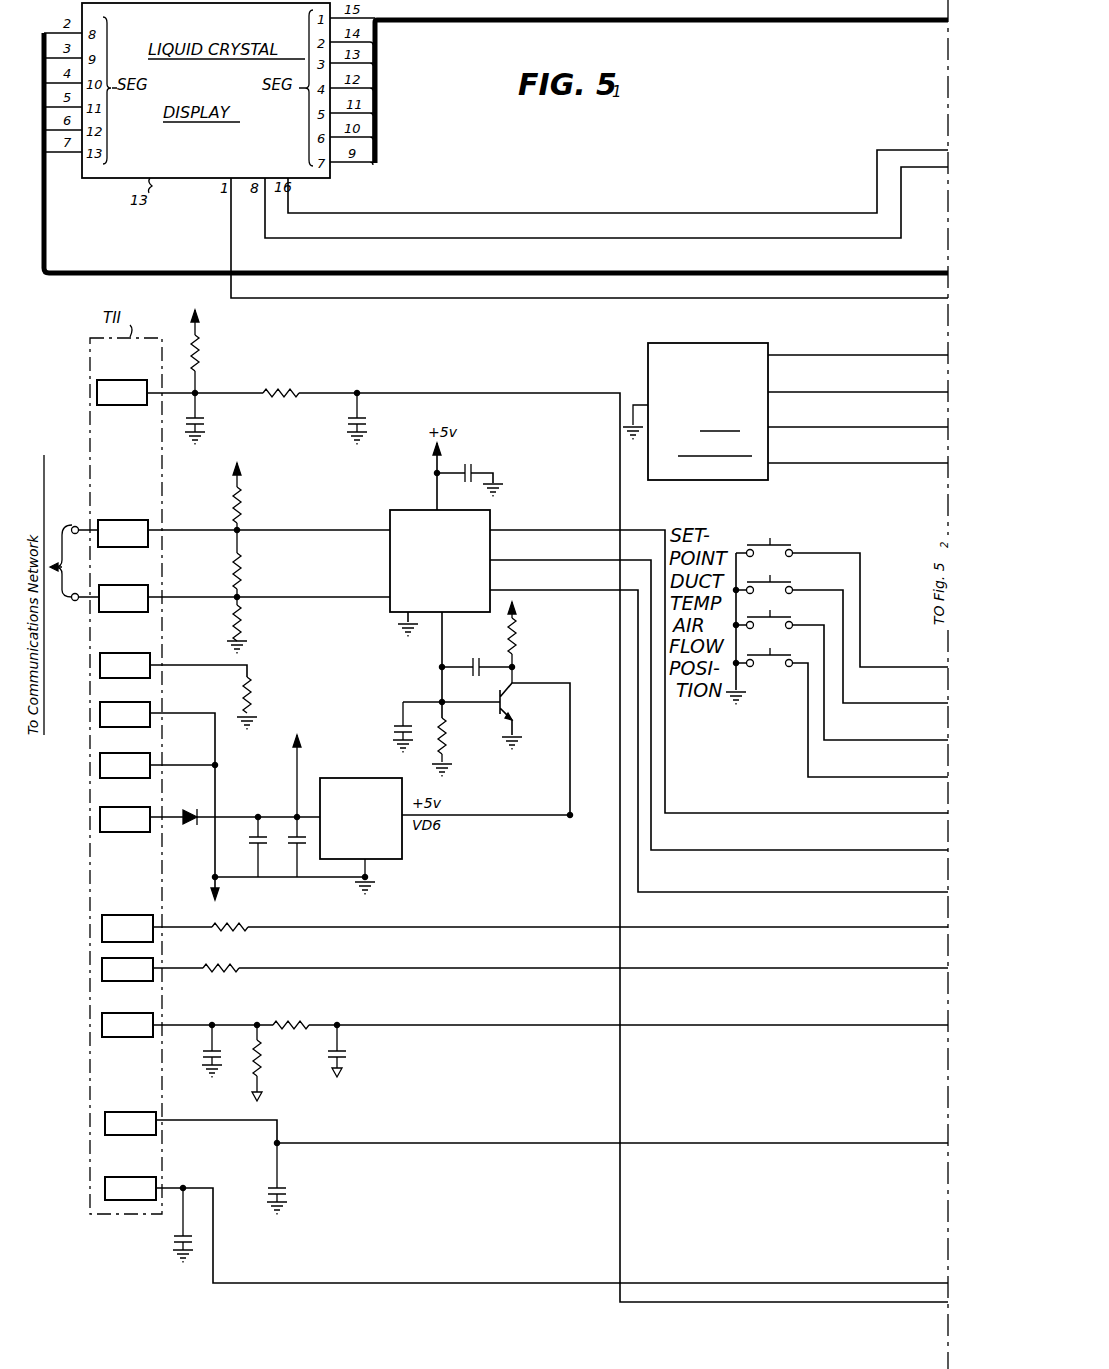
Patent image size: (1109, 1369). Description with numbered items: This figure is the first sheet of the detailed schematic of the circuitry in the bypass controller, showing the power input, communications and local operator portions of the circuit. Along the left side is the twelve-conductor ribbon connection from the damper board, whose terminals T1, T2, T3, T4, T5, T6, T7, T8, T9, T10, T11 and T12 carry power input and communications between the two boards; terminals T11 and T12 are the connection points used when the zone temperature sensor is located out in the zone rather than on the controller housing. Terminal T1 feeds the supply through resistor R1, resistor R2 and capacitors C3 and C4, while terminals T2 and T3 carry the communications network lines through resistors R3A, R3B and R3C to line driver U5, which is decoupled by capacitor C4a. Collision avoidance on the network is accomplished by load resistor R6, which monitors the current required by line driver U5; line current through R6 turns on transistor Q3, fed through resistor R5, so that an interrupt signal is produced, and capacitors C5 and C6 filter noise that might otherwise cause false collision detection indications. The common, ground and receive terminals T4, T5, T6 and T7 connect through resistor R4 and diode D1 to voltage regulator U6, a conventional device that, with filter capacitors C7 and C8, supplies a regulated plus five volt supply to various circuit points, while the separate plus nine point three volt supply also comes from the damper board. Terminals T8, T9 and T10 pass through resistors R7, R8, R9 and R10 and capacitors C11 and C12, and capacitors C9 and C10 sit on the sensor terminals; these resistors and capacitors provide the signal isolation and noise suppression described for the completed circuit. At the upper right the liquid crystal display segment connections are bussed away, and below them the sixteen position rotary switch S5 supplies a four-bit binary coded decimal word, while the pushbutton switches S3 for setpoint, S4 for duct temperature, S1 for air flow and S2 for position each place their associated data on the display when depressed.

The terminal T1 is at (130, 379).
The terminal T2 is at (131, 519).
The terminal T3 is at (131, 584).
The terminal T4 is at (131, 652).
The terminal T5 is at (133, 701).
The terminal T6 is at (133, 751).
The terminal T7 is at (124, 809).
The terminal T8 is at (126, 915).
The terminal T9 is at (110, 981).
The terminal T10 is at (132, 1037).
The terminal T11 is at (124, 1112).
The terminal T12 is at (126, 1177).
The resistor R1 is at (199, 352).
The resistor R2 is at (297, 388).
The resistor R3A is at (232, 508).
The resistor R3B is at (232, 576).
The resistor R3C is at (232, 620).
The resistor R4 is at (243, 692).
The resistor R5 is at (516, 635).
The load resistor R6 is at (446, 739).
The resistor R7 is at (232, 922).
The resistor R8 is at (234, 964).
The resistor R9 is at (261, 1076).
The resistor R10 is at (288, 1021).
The capacitor C3 is at (202, 418).
The capacitor C4 is at (350, 418).
The capacitor C4a is at (471, 473).
The capacitor C5 is at (397, 728).
The capacitor C6 is at (472, 667).
The capacitor C7 is at (253, 833).
The capacitor C8 is at (293, 833).
The capacitor C9 is at (175, 1237).
The capacitor C10 is at (281, 1182).
The capacitor C11 is at (209, 1049).
The capacitor C12 is at (339, 1049).
The diode D1 is at (192, 824).
The transistor Q3 is at (514, 700).
The line driver U5 is at (452, 580).
The voltage regulator U6 is at (378, 806).
The air flow switch S1 is at (772, 614).
The position switch S2 is at (772, 652).
The setpoint switch S3 is at (772, 542).
The duct temperature switch S4 is at (772, 579).
The rotary switch S5 is at (705, 342).